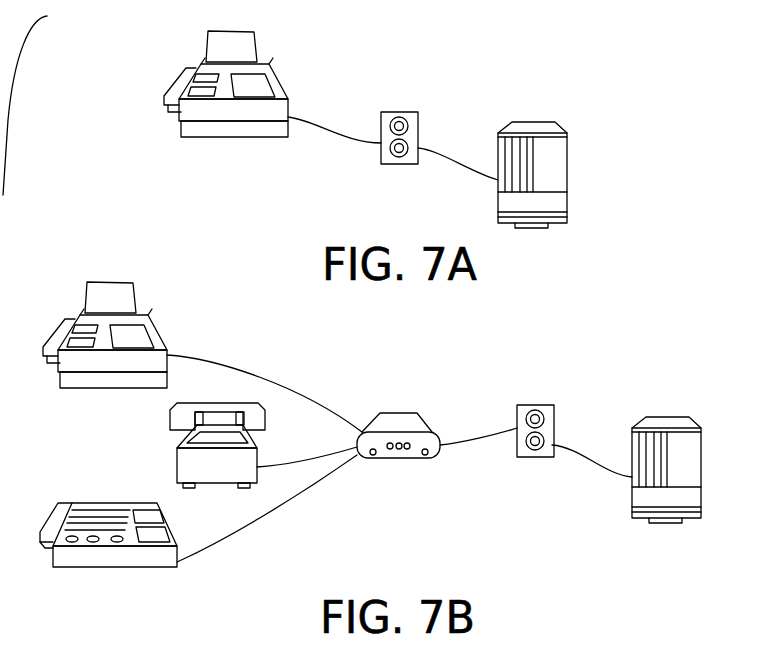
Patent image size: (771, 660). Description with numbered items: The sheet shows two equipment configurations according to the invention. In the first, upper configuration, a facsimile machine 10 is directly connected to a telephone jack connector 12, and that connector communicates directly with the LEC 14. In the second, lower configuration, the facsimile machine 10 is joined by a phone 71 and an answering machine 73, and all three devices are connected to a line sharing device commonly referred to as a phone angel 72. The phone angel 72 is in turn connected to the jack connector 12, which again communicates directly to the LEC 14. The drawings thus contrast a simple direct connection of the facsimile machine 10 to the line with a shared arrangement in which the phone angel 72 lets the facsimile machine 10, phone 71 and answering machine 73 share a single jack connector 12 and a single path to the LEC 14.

In FIG. 7A, the facsimile machine 10 is at (208, 34).
In FIG. 7B, the facsimile machine 10 is at (87, 290).
In FIG. 7A, the RJ-11 connector 12 is at (381, 113).
In FIG. 7B, the RJ-11 connector 12 is at (517, 410).
In FIG. 7A, the LEC 14 is at (498, 152).
In FIG. 7B, the LEC 14 is at (632, 448).
In FIG. 7B, the phone 71 is at (240, 403).
In FIG. 7B, the phone angel 72 is at (380, 413).
In FIG. 7B, the answering machine 73 is at (110, 503).